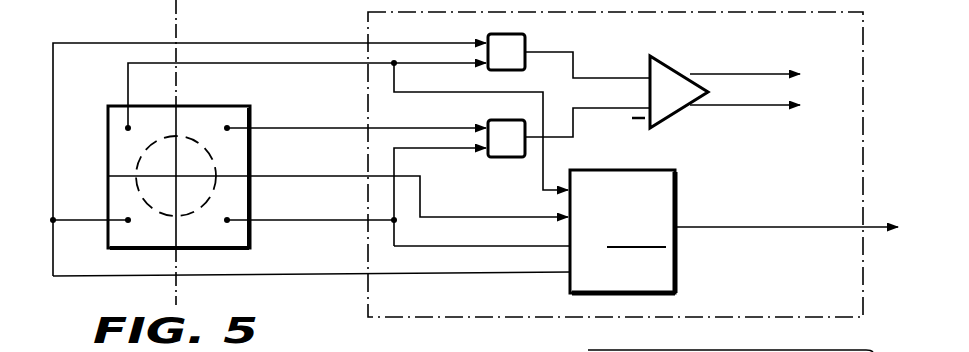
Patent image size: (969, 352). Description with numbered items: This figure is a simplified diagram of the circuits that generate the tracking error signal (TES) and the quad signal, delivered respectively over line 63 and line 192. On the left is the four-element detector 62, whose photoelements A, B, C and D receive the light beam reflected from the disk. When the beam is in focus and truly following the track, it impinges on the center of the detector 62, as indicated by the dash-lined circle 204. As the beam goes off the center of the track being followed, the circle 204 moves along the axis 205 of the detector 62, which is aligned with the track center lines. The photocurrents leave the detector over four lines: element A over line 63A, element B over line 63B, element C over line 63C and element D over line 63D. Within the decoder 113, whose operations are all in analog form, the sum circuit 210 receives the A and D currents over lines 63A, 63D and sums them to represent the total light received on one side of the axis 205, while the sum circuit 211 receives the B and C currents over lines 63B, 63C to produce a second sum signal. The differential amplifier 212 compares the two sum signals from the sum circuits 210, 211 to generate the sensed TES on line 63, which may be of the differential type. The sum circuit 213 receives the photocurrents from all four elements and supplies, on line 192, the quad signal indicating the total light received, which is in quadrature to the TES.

The detector 62 is at (231, 106).
The dash-lined circle 204 is at (138, 160).
The axis 205 is at (178, 256).
The line 63A is at (313, 66).
The line 63B is at (461, 217).
The line 63C is at (468, 232).
The line 63D is at (316, 22).
The sum circuit 210 is at (520, 34).
The sum circuit 211 is at (496, 120).
The differential amplifier 212 is at (675, 66).
The line 63 is at (789, 38).
The sum circuit 213 is at (658, 147).
The line 192 is at (866, 224).
The decoder 113 is at (863, 286).